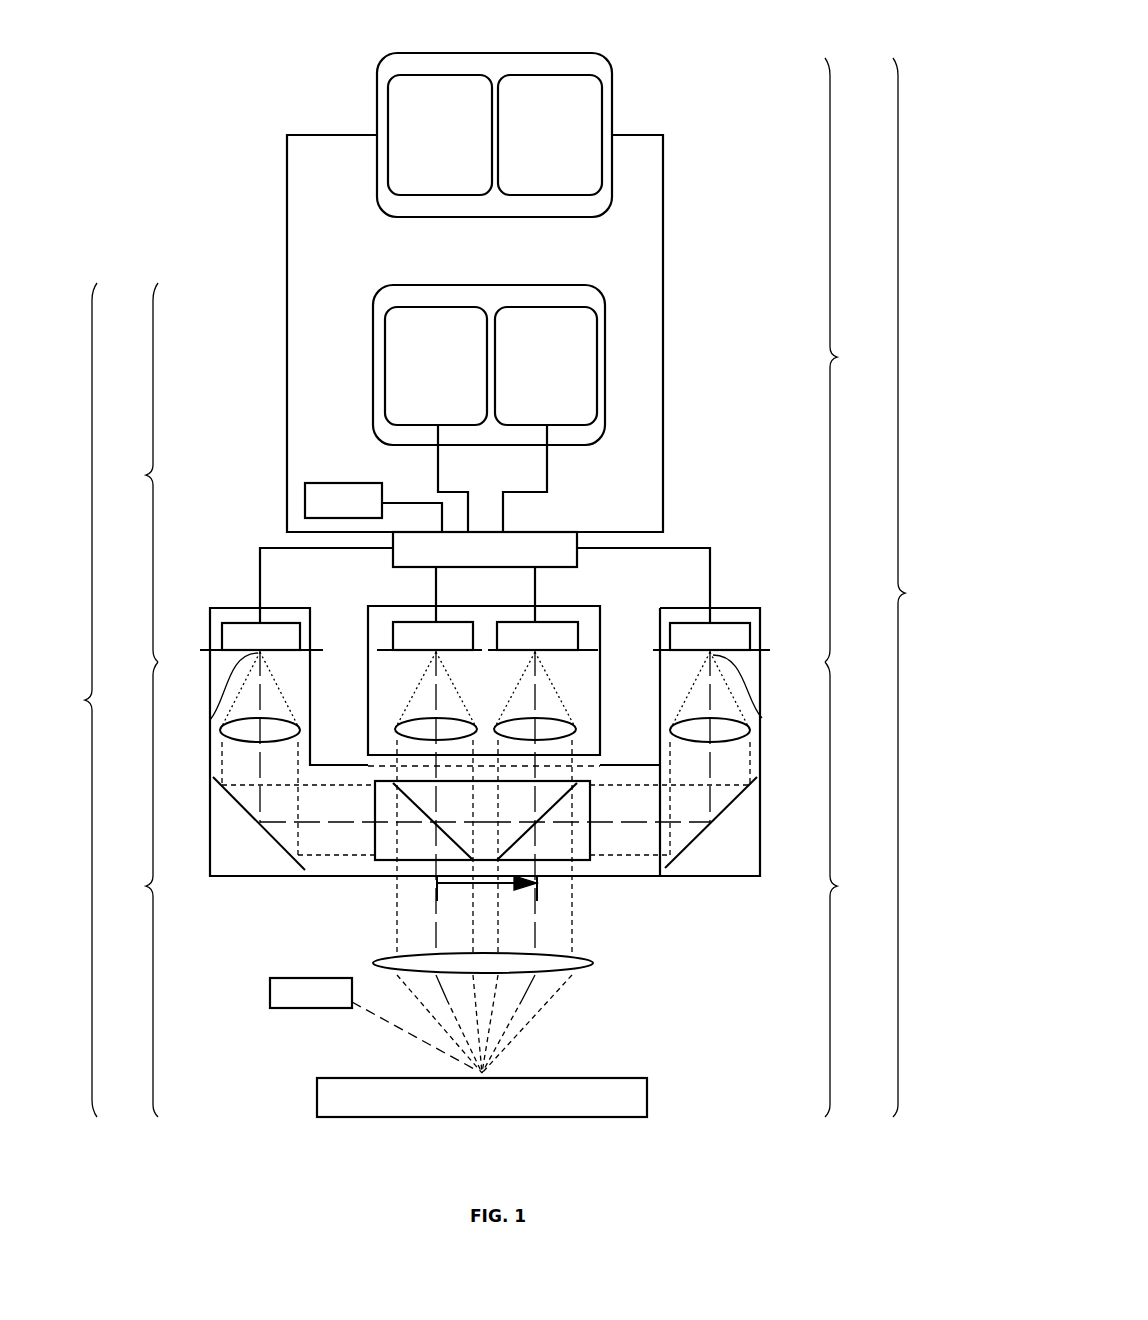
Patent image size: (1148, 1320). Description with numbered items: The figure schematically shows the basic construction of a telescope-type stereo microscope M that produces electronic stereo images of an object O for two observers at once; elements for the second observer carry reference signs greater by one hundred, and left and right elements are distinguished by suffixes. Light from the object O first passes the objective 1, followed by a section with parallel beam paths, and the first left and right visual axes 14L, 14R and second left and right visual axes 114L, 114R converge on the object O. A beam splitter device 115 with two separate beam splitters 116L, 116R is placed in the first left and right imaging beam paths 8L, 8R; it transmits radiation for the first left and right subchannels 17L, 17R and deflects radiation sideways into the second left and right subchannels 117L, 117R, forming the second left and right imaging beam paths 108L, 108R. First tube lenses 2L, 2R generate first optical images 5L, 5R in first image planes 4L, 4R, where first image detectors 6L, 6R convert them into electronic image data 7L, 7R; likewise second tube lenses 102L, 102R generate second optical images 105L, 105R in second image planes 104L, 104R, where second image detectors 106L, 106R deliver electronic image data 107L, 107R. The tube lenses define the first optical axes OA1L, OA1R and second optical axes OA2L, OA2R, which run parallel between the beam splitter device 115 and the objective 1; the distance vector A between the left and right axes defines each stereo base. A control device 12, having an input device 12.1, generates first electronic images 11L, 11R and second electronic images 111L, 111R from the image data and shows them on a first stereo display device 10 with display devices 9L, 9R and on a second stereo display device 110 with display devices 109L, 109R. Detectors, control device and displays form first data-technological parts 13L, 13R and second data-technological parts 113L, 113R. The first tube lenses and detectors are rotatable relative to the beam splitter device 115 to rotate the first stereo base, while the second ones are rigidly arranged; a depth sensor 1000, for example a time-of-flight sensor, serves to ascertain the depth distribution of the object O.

The microscope M is at (253, 68).
The objective 1 is at (590, 963).
The first left tube lens 2L is at (397, 728).
The first right tube lens 2R is at (573, 728).
The first left image plane 4L is at (393, 653).
The first right image plane 4R is at (577, 653).
The first left optical image 5L is at (423, 652).
The first right optical image 5R is at (547, 652).
The first left image detector 6L is at (367, 635).
The first right image detector 6R is at (607, 632).
The first left electronic image data 7L is at (435, 598).
The first right electronic image data 7R is at (535, 598).
The first left imaging beam path 8L is at (127, 889).
The first right imaging beam path 8R is at (858, 889).
The second left imaging beam path 108L is at (152, 889).
The second right imaging beam path 108R is at (831, 889).
The first left display device 9L is at (438, 306).
The first right display device 9R is at (547, 306).
The first stereo display device 10 is at (372, 367).
The first left electronic image 11L is at (437, 480).
The first right electronic image 11R is at (548, 472).
The control device 12 is at (580, 545).
The input device 12.1 is at (305, 498).
The first left data-technological part 13L is at (130, 472).
The first right data-technological part 13R is at (152, 472).
The first left visual axis 14L is at (450, 1015).
The first right visual axis 14R is at (513, 1015).
The second left visual axis 114L is at (439, 1024).
The second right visual axis 114R is at (527, 1024).
The first left subchannel 17L is at (71, 700).
The first right subchannel 17R is at (91, 700).
The second left tube lens 102L is at (210, 795).
The second right tube lens 102R is at (723, 807).
The second left image plane 104L is at (215, 656).
The second right image plane 104R is at (762, 660).
The second left optical image 105L is at (220, 730).
The second right optical image 105R is at (800, 773).
The second left image detector 106L is at (222, 637).
The second right image detector 106R is at (750, 635).
The second left electronic image data 107L is at (260, 570).
The second right electronic image data 107R is at (710, 582).
The second left display device 109L is at (443, 74).
The second right display device 109R is at (550, 74).
The second stereo display device 110 is at (608, 105).
The second left electronic image 111L is at (287, 298).
The second right electronic image 111R is at (663, 332).
The second left data-technological part 113L is at (860, 360).
The second right data-technological part 113R is at (831, 360).
The beam splitter device 115 is at (580, 877).
The left beam splitter 116L is at (378, 817).
The right beam splitter 116R is at (592, 813).
The second left subchannel 117L is at (927, 587).
The second right subchannel 117R is at (899, 587).
The depth sensor 1000 is at (285, 1008).
The distance vector A is at (437, 905).
The object O is at (647, 1097).
The first left optical axis OA1L is at (437, 885).
The first right optical axis OA1R is at (572, 915).
The second left optical axis OA2L is at (255, 822).
The second right optical axis OA2R is at (760, 853).